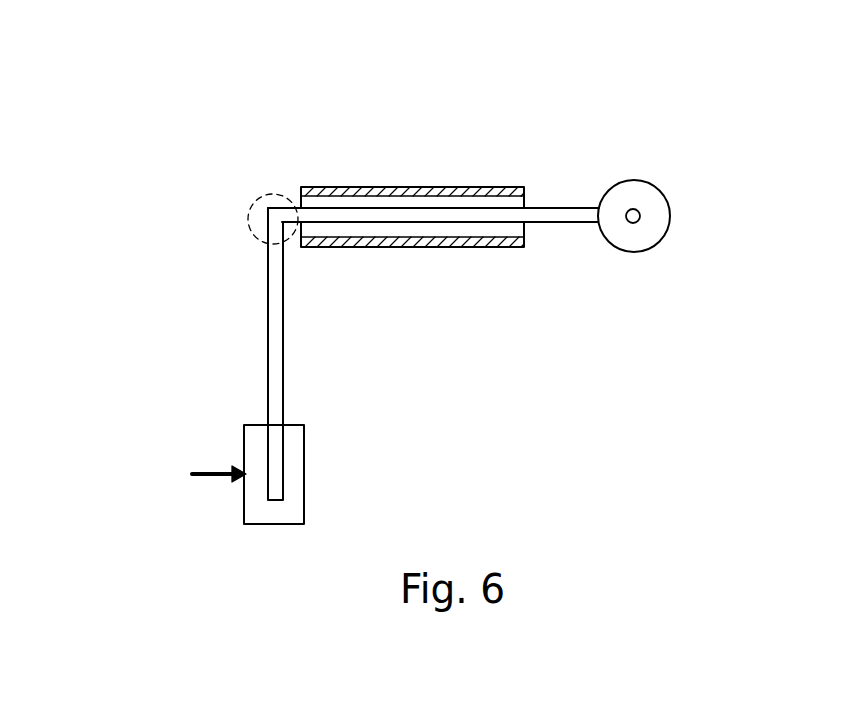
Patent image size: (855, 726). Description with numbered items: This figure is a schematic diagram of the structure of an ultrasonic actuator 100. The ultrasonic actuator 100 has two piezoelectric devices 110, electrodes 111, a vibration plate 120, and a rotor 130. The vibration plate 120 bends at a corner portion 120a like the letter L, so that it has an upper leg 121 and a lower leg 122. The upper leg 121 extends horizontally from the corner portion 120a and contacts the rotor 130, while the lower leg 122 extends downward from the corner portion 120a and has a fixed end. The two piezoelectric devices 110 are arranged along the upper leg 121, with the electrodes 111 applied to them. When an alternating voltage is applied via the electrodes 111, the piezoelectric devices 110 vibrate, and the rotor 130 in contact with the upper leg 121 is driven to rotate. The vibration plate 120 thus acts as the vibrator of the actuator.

The ultrasonic actuator 100 is at (662, 122).
The piezoelectric device 110 is at (453, 202).
The electrode 111 is at (356, 190).
The vibration plate 120 is at (586, 310).
The corner portion 120a is at (267, 192).
The upper leg 121 is at (563, 213).
The lower leg 122 is at (277, 378).
The rotor 130 is at (648, 239).